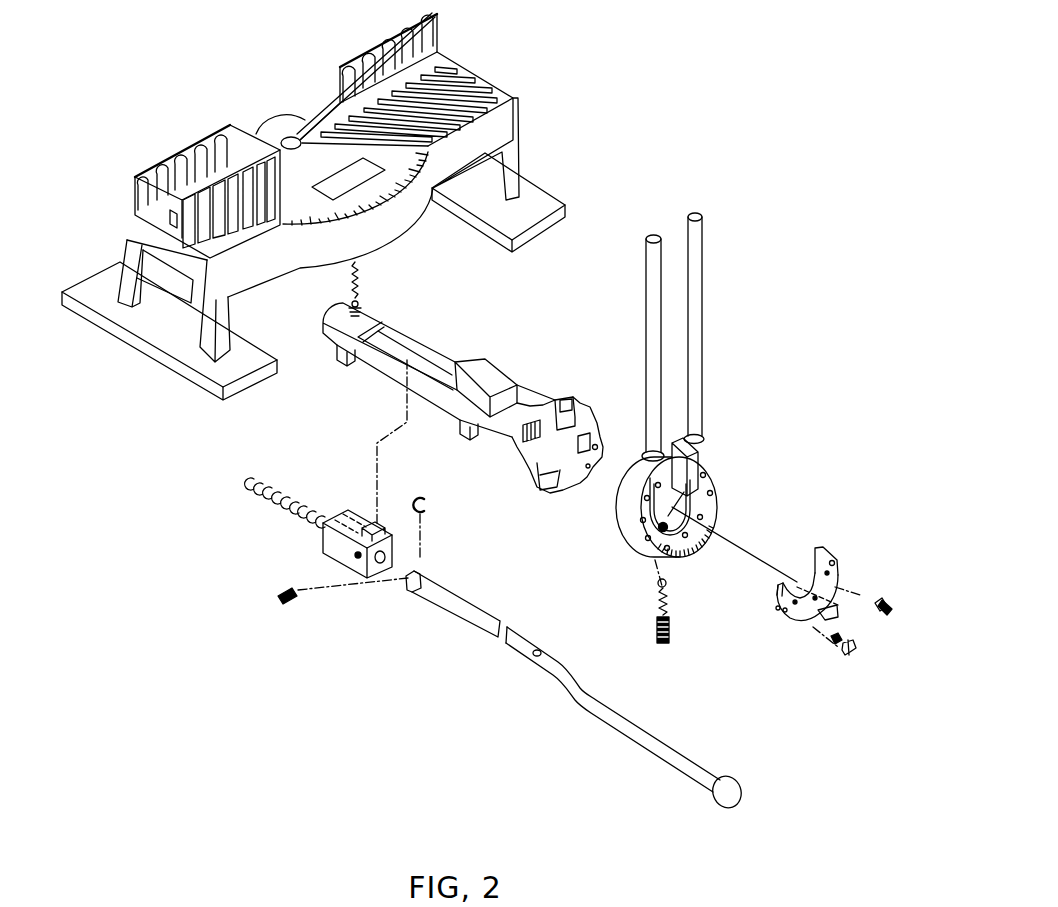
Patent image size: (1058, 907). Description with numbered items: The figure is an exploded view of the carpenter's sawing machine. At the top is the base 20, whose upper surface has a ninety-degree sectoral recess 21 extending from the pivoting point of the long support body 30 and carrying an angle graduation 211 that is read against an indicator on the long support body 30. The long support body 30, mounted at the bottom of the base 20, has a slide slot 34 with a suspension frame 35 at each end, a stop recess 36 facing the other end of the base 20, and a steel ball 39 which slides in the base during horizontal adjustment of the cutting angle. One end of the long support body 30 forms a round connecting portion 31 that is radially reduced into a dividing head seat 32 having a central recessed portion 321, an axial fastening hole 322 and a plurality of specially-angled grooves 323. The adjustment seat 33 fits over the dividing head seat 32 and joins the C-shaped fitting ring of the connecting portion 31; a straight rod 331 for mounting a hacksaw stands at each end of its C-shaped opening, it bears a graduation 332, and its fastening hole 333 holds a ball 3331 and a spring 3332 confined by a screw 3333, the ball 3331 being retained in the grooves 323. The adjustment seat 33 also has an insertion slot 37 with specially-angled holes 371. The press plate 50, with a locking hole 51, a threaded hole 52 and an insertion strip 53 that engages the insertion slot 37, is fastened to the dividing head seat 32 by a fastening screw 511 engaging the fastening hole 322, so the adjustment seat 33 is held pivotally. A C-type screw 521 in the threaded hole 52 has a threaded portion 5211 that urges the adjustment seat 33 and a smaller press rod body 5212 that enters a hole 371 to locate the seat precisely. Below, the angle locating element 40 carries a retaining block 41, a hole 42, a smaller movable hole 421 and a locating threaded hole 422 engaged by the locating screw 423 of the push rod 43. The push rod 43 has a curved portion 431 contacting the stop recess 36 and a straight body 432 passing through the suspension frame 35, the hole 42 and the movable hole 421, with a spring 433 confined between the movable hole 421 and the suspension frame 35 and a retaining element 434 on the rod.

The base 20 is at (506, 67).
The sectoral recess 21 is at (306, 132).
The angle graduation 211 is at (423, 157).
The long support body 30 is at (447, 340).
The connecting portion 31 is at (579, 333).
The dividing head seat 32 is at (566, 402).
The recessed portion 321 is at (600, 452).
The fastening hole 322 is at (583, 486).
The specially-angled grooves 323 is at (527, 468).
The adjustment seat 33 is at (747, 466).
The straight rod 331 is at (700, 245).
The graduation 332 is at (717, 456).
The fastening hole 333 is at (670, 526).
The ball 3331 is at (667, 583).
The spring 3332 is at (667, 608).
The screw 3333 is at (657, 645).
The slide slot 34 is at (397, 343).
The suspension frame 35 is at (355, 358).
The stop recess 36 is at (560, 488).
The insertion slot 37 is at (705, 504).
The specially-angled holes 371 is at (656, 551).
The steel ball 39 is at (357, 267).
The angle locating element 40 is at (358, 585).
The retaining block 41 is at (365, 518).
The hole 42 is at (328, 533).
The movable hole 421 is at (382, 565).
The locating threaded hole 422 is at (355, 562).
The locating screw 423 is at (278, 596).
The push rod 43 is at (553, 705).
The curved portion 431 is at (673, 760).
The straight body 432 is at (476, 618).
The spring 433 is at (257, 493).
The retaining element 434 is at (421, 497).
The press plate 50 is at (845, 535).
The locking hole 51 is at (827, 545).
The threaded hole 52 is at (802, 629).
The insertion strip 53 is at (838, 568).
The fastening screw 511 is at (880, 602).
The C-type screw 521 is at (848, 658).
The threaded portion 5211 is at (845, 637).
The press rod body 5212 is at (828, 640).